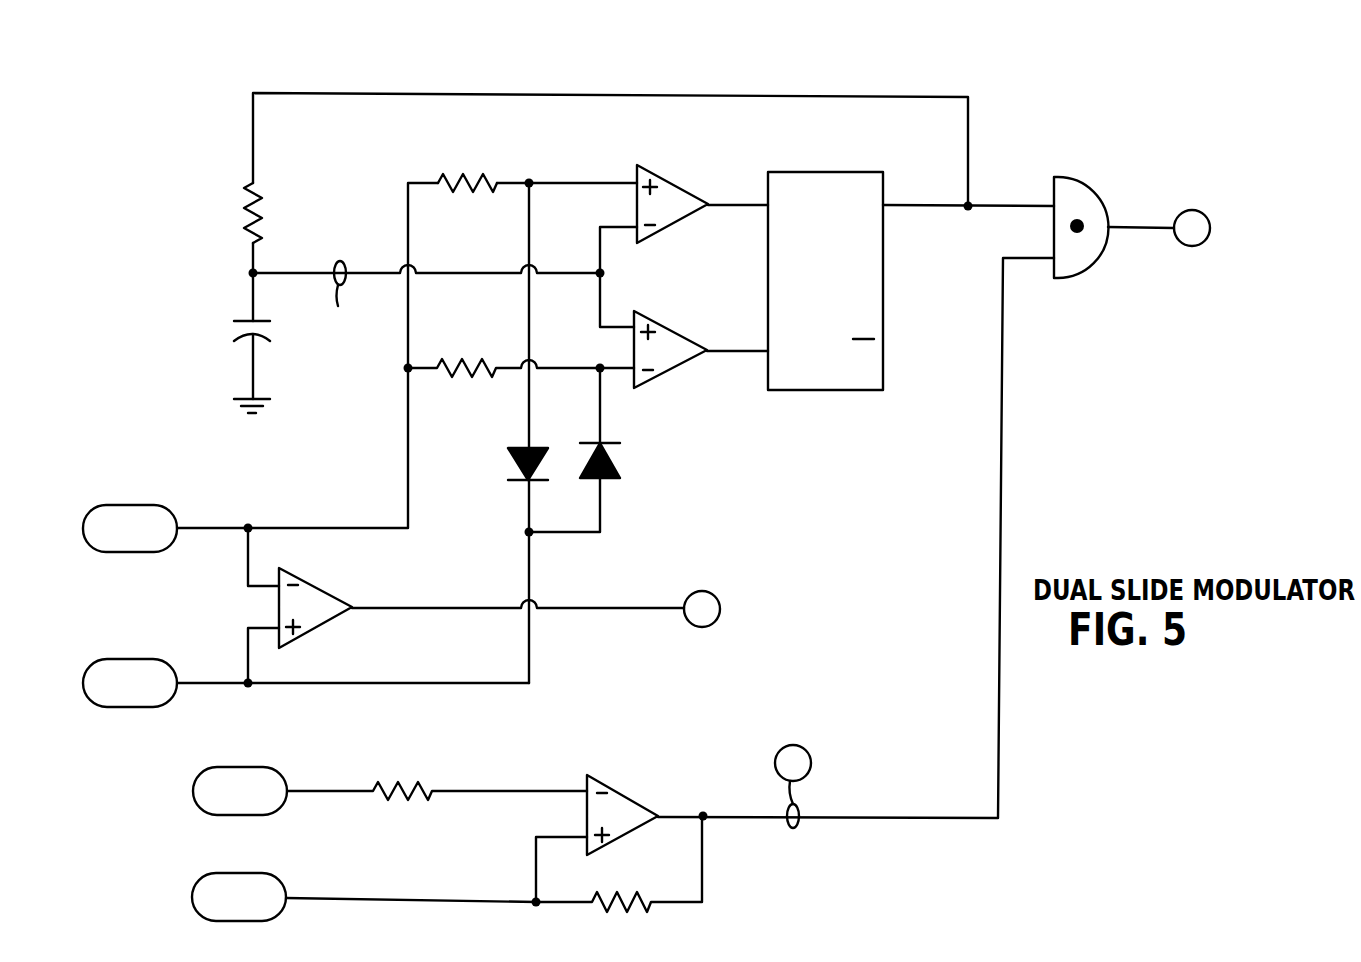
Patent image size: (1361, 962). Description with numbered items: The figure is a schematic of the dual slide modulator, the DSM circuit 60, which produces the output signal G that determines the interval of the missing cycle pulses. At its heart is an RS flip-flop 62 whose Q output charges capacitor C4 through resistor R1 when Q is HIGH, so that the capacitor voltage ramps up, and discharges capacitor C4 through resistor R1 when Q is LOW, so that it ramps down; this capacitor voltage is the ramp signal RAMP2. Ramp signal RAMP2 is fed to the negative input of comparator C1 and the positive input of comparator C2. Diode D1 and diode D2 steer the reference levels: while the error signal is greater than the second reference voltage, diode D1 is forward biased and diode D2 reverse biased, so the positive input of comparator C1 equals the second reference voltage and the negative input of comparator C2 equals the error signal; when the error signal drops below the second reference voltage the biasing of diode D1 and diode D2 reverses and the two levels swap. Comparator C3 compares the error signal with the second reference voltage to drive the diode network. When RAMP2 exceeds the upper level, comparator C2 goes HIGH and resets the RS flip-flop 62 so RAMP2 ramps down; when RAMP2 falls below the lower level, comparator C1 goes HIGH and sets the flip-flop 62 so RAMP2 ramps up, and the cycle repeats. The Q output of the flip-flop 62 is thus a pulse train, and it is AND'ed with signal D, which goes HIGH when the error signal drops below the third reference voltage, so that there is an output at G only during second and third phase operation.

The DSM circuit 60 is at (172, 87).
The RS flip-flop 62 is at (828, 172).
The resistor R1 is at (228, 213).
The capacitor C4 is at (231, 334).
The ramp signal RAMP2 is at (336, 300).
The comparator C1 is at (672, 201).
The comparator C2 is at (670, 346).
The comparator C3 is at (316, 607).
The diode D1 is at (519, 449).
The diode D2 is at (589, 448).